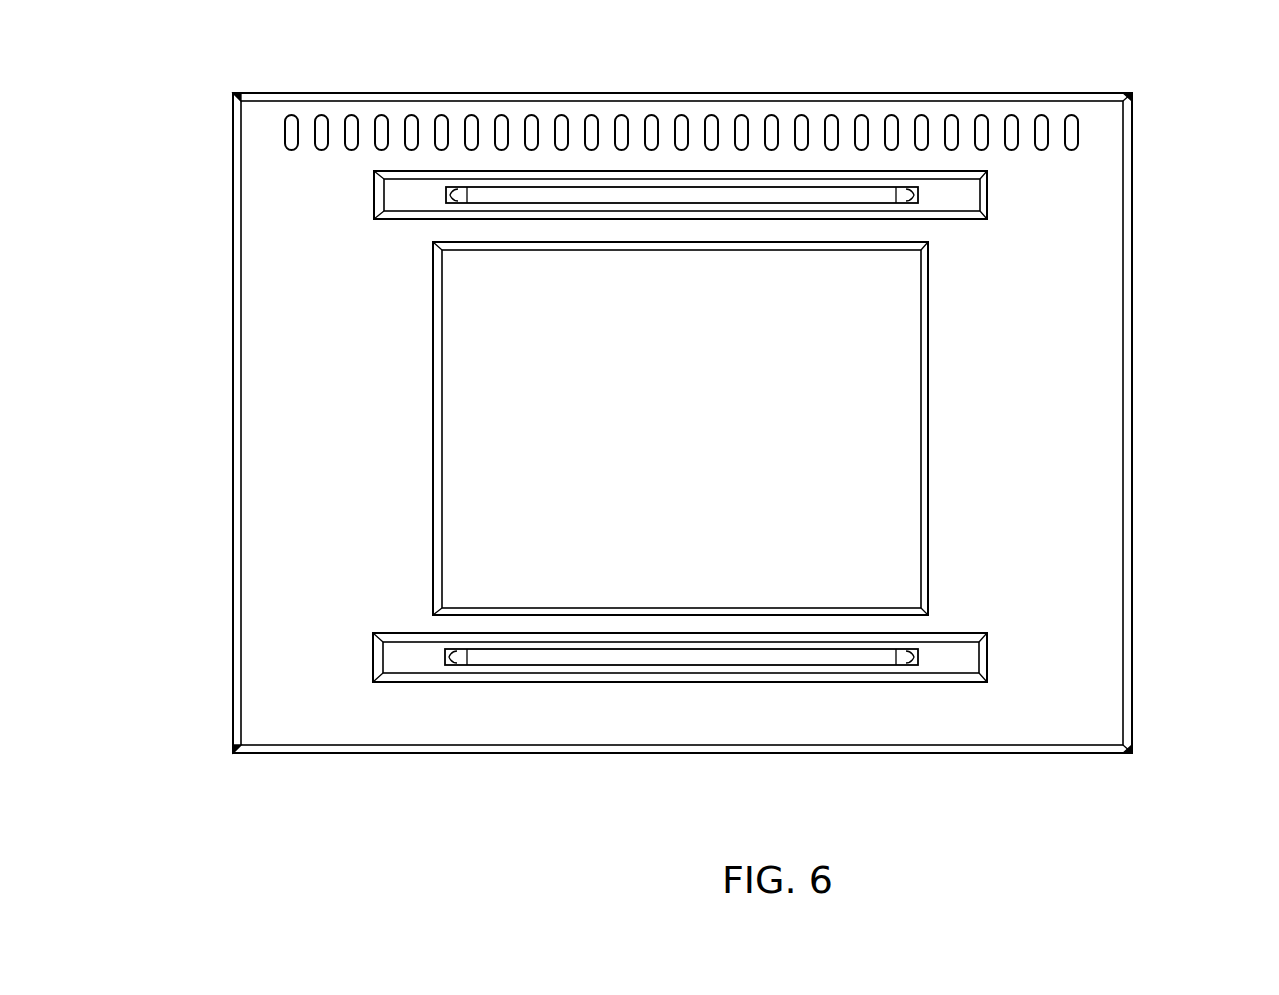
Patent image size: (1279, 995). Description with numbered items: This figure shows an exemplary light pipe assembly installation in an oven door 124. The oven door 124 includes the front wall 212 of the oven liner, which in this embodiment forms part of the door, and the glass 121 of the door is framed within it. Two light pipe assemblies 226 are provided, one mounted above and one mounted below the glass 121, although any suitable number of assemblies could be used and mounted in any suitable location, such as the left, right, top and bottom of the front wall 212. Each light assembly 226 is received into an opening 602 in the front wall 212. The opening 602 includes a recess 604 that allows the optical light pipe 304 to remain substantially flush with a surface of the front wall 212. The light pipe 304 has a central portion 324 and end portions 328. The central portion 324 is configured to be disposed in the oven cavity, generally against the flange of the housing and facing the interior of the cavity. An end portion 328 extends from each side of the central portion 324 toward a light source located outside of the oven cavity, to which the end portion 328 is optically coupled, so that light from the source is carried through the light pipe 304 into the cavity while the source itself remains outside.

The oven door 124 is at (1133, 290).
The front wall 212 is at (275, 306).
The glass 121 is at (887, 472).
The central portion 324 is at (813, 190).
The optical light pipe 304 is at (604, 195).
The end portion 328 is at (460, 195).
The light pipe assembly 226 is at (883, 172).
The opening 602 is at (376, 188).
The recess 604 is at (378, 204).